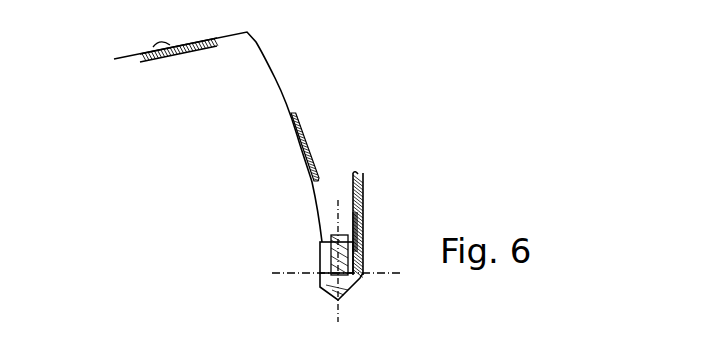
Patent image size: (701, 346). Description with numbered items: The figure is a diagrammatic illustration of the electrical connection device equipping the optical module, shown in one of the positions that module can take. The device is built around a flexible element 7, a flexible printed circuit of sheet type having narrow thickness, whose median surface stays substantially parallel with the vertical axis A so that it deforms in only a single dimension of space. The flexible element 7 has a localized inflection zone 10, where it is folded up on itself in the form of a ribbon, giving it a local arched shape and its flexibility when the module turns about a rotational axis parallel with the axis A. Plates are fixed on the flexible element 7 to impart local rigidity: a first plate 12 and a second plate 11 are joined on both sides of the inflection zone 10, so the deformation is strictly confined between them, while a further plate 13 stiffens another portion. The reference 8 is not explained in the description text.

The flexible element 7 is at (264, 169).
The wall 8 is at (281, 90).
The inflection zone 10 is at (360, 287).
The second plate 11 is at (354, 181).
The first plate 12 is at (299, 138).
The plate 13 is at (140, 54).
The axis A is at (336, 278).